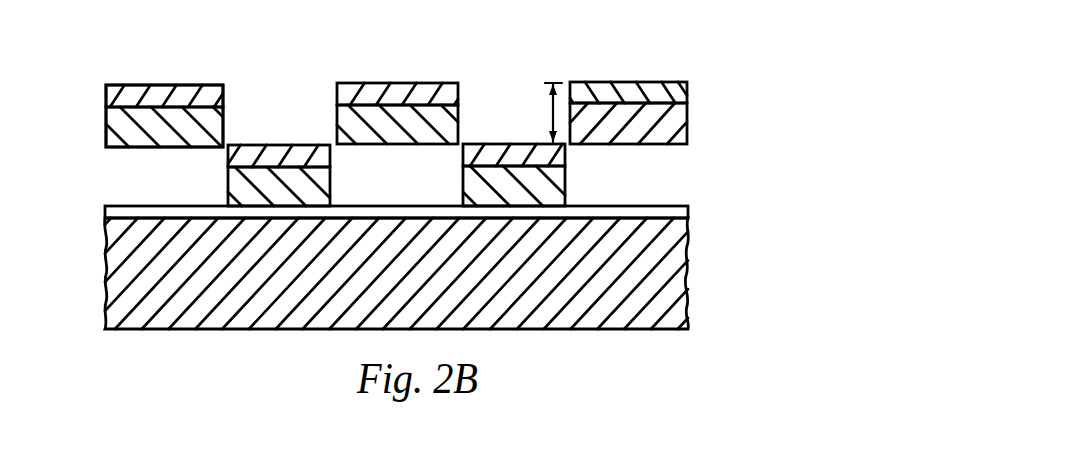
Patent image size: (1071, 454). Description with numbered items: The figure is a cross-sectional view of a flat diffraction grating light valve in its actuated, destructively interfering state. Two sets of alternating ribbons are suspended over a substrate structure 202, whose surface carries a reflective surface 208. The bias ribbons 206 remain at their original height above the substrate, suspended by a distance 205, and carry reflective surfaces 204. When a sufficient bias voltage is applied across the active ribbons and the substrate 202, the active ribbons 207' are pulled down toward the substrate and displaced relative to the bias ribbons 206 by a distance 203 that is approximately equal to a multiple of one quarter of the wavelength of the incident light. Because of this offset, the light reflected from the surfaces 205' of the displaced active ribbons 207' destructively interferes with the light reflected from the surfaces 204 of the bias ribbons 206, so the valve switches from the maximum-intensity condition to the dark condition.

The substrate structure 202 is at (688, 275).
The displacement distance 203 is at (552, 96).
The reflective surface of bias ribbons 204 is at (158, 85).
The distance 205 is at (128, 140).
The reflective surface of active ribbons 205' is at (396, 126).
The bias ribbons 206 is at (142, 147).
The active ribbons in displaced state 207' is at (434, 186).
The reflective surface of substrate 208 is at (688, 207).